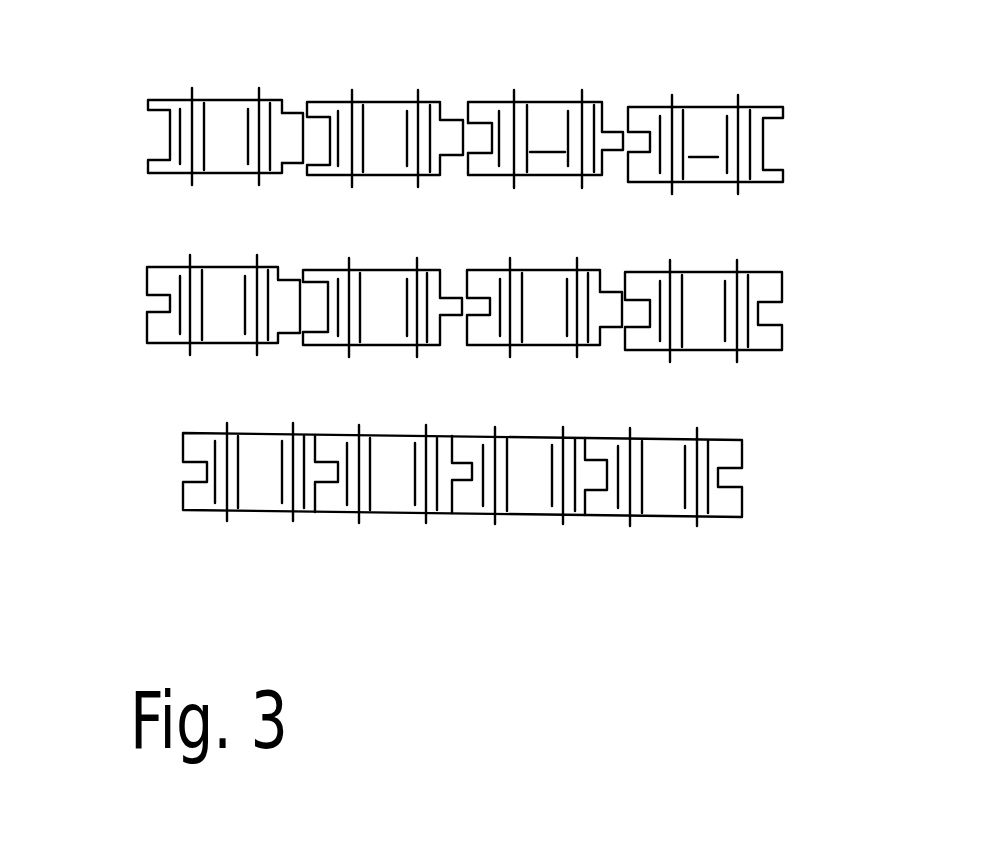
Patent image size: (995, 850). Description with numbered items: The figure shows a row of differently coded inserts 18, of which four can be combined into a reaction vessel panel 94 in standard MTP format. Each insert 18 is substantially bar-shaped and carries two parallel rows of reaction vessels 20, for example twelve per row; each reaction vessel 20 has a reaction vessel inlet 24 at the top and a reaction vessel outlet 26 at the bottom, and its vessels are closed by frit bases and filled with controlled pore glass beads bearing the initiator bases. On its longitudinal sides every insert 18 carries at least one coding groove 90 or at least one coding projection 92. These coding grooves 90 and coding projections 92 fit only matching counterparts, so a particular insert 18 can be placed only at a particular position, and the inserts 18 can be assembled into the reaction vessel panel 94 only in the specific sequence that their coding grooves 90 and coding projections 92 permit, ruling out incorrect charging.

The insert 18 is at (458, 346).
The reaction vessel 20 is at (508, 128).
The reaction vessel inlet 24 is at (517, 100).
The reaction vessel outlet 26 is at (510, 180).
The coding groove 90 is at (458, 137).
The coding projection 92 is at (293, 148).
The reaction vessel panel 94 is at (433, 518).